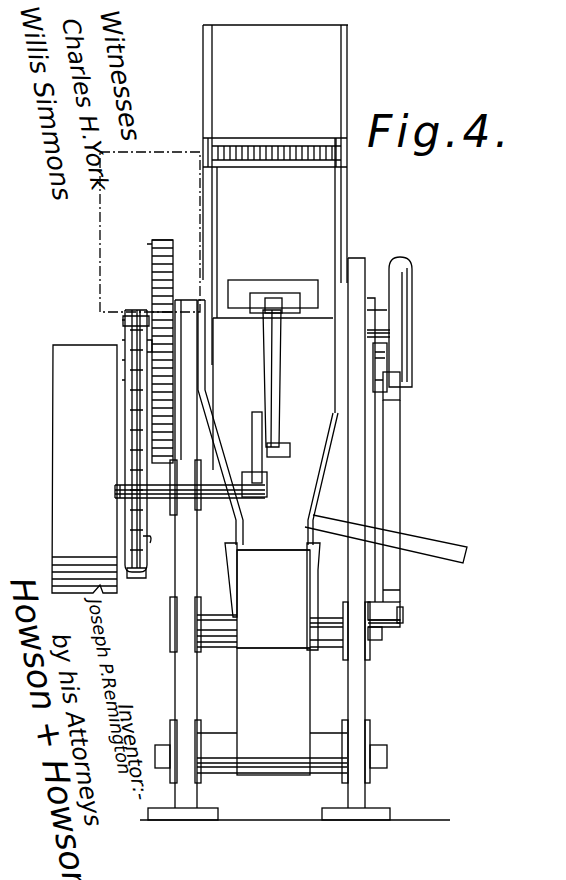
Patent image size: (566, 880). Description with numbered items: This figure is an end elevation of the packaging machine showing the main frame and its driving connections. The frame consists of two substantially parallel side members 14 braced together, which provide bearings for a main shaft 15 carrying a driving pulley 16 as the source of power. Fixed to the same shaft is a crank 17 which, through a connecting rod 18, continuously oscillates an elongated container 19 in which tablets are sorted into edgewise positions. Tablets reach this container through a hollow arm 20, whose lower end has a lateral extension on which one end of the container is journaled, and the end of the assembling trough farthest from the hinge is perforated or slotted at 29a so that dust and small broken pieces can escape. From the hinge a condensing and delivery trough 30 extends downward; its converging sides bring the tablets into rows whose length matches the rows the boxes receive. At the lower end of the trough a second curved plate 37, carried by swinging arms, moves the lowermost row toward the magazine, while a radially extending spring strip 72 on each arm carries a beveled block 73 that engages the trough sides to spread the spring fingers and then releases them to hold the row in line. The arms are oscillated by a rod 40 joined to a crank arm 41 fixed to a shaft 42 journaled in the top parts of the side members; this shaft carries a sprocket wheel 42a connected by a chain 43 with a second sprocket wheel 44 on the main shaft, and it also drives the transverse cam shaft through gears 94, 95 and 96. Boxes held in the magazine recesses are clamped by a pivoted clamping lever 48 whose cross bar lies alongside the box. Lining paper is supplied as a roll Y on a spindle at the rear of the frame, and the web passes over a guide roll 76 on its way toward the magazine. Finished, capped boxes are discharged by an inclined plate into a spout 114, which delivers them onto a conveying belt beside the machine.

The side members 14 is at (175, 683).
The main shaft 15 is at (220, 498).
The driving pulley 16 is at (84, 469).
The crank 17 is at (258, 468).
The connecting rod 18 is at (284, 376).
The elongated container 19 is at (327, 92).
The hollow arm 20 is at (100, 230).
The perforated or slotted end 29a is at (258, 165).
The condensing and delivery trough 30 is at (320, 211).
The second curved plate 37 is at (255, 627).
The rod 40 is at (392, 466).
The crank arm 41 is at (382, 350).
The shaft 42 is at (150, 344).
The sprocket wheel 42a is at (123, 320).
The chain 43 is at (133, 577).
The second sprocket wheel 44 is at (150, 543).
The clamping lever 48 is at (412, 355).
The spring strip 72 is at (228, 581).
The beveled block 73 is at (240, 545).
The guide roll 76 is at (330, 770).
The gear 94 is at (152, 290).
The gear 95 is at (163, 445).
The gear 96 is at (160, 242).
The spout 114 is at (456, 546).
The roll of paper Y is at (290, 704).